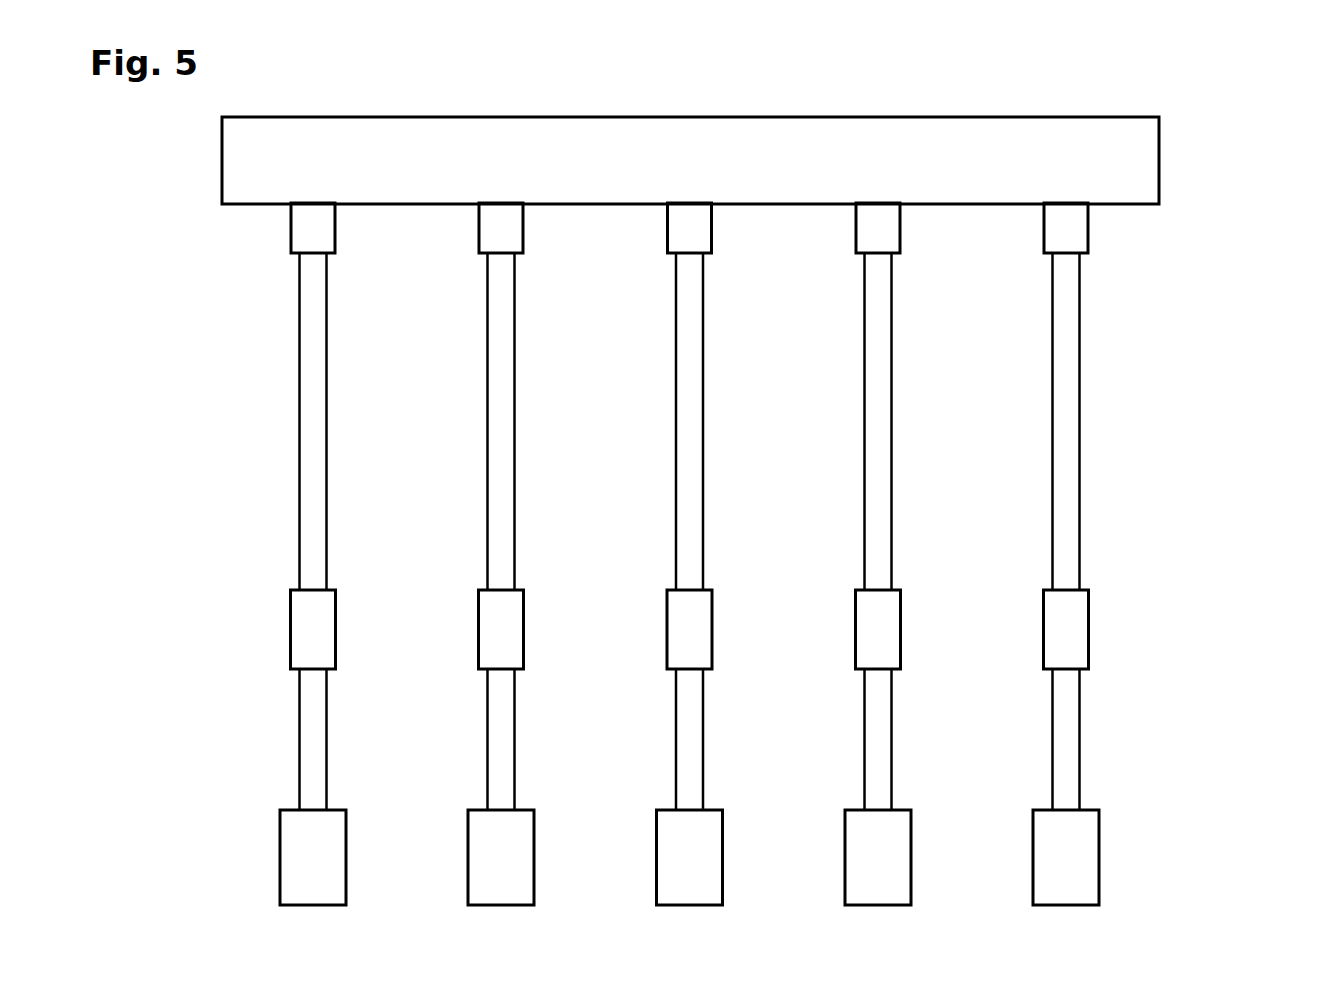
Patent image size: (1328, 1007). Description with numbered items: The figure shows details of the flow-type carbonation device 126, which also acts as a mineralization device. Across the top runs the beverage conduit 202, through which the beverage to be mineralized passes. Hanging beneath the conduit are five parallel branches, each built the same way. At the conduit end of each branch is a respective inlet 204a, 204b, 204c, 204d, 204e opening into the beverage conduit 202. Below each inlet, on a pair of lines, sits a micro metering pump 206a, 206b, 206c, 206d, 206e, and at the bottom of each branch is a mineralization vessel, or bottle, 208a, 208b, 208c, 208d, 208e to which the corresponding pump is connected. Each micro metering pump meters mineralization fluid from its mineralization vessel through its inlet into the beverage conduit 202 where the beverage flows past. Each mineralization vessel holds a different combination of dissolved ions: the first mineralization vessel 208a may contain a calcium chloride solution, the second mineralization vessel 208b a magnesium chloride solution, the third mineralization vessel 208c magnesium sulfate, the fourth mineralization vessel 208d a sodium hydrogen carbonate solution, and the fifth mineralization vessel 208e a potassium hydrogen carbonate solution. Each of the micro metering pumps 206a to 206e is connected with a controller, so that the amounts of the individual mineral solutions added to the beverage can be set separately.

The flow-type carbonation device 126 is at (1208, 103).
The beverage conduit 202 is at (1140, 163).
The inlet 204a is at (310, 234).
The inlet 204b is at (445, 248).
The inlet 204c is at (634, 248).
The inlet 204d is at (822, 248).
The inlet 204e is at (1010, 248).
The micro metering pump 206a is at (310, 633).
The micro metering pump 206b is at (446, 642).
The micro metering pump 206c is at (635, 642).
The micro metering pump 206d is at (823, 642).
The micro metering pump 206e is at (1011, 642).
The mineralization vessel 208a is at (322, 896).
The mineralization vessel 208b is at (451, 889).
The mineralization vessel 208c is at (640, 889).
The mineralization vessel 208d is at (828, 889).
The mineralization vessel 208e is at (1016, 889).